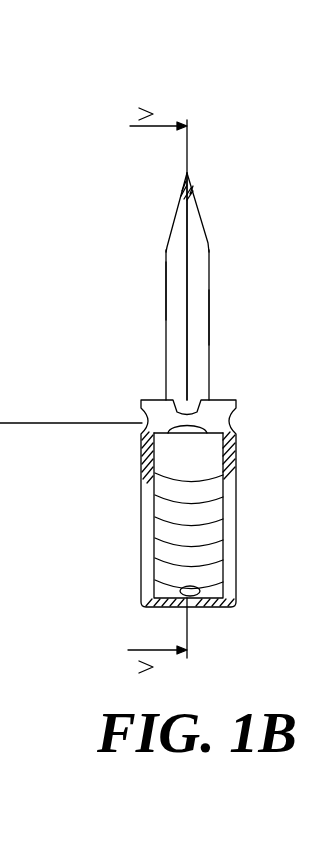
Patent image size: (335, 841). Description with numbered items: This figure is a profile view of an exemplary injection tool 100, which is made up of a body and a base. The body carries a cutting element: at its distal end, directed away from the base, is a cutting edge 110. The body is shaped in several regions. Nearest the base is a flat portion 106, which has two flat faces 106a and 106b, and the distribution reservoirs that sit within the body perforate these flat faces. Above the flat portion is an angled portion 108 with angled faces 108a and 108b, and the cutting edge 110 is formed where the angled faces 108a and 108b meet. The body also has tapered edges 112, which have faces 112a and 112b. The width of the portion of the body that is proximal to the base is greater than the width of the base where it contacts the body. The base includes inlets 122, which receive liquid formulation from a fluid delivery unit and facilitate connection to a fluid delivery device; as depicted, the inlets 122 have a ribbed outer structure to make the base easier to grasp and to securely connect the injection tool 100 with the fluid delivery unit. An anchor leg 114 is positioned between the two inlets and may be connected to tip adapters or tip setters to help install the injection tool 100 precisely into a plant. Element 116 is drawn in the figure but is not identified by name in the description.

The injection tool 100 is at (56, 91).
The cutting edge 110 is at (197, 154).
The angled portion 108 is at (92, 166).
The angled face 108a is at (166, 211).
The angled face 108b is at (209, 211).
The flat portion 106 is at (92, 253).
The flat face 106a is at (158, 339).
The flat face 106b is at (220, 339).
The tapered edges 112 is at (188, 262).
The face 112a is at (178, 289).
The face 112b is at (200, 313).
The anchor leg 114 is at (156, 583).
The coil 116 is at (173, 527).
The inlets 122 is at (200, 605).